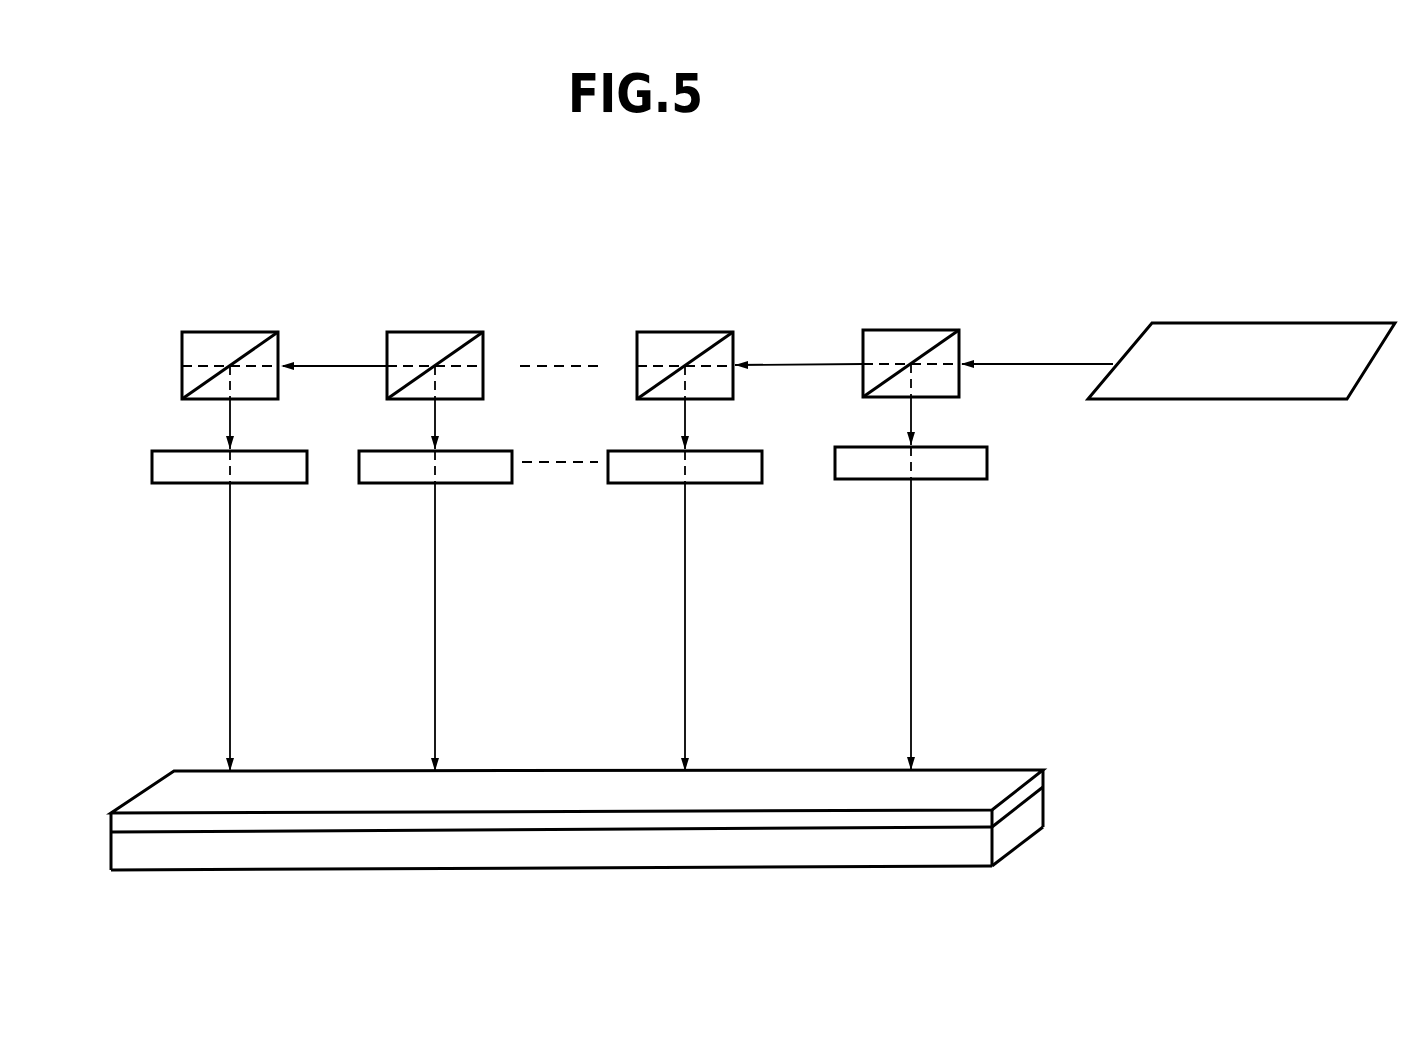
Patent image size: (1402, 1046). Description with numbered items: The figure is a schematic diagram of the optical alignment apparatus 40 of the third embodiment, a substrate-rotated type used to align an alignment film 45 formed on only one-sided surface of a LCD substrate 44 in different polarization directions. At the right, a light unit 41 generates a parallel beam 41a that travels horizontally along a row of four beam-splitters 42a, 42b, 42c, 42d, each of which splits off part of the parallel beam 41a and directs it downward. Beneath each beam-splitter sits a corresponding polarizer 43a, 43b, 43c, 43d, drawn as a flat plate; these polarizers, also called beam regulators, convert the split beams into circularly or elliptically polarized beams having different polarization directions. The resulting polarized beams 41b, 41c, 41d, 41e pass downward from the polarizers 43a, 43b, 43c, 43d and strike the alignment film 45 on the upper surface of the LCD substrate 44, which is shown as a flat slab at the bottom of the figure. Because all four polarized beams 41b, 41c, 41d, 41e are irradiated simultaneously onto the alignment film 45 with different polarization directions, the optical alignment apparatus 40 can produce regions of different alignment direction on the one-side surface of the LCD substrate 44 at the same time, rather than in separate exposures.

The optical alignment apparatus 40 is at (827, 240).
The light unit 41 is at (1234, 328).
The parallel beam 41a is at (1046, 361).
The polarized beam 41b is at (232, 606).
The polarized beam 41c is at (437, 606).
The polarized beam 41d is at (687, 604).
The polarized beam 41e is at (913, 605).
The beam-splitter 42a is at (232, 331).
The beam-splitter 42b is at (433, 331).
The beam-splitter 42c is at (688, 331).
The beam-splitter 42d is at (912, 329).
The polarizer 43a is at (292, 484).
The polarizer 43b is at (494, 484).
The polarizer 43c is at (745, 484).
The polarizer 43d is at (970, 480).
The LCD substrate 44 is at (1038, 815).
The alignment film 45 is at (1036, 779).